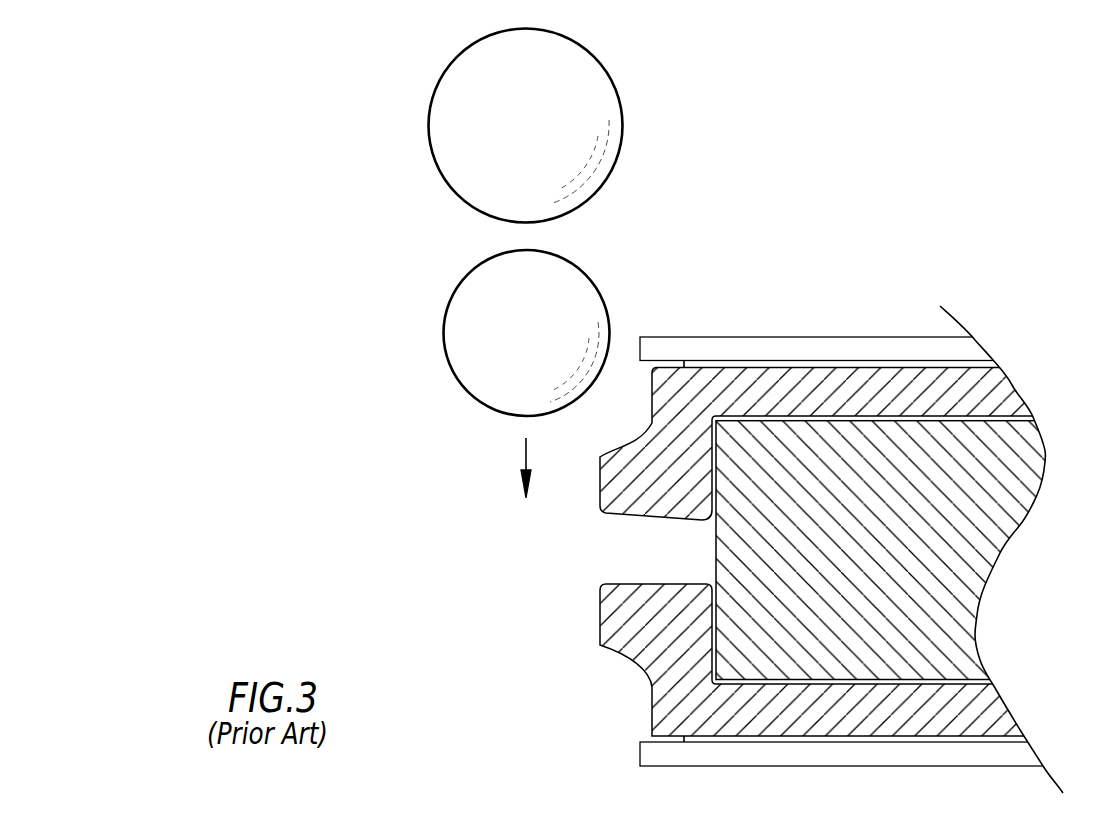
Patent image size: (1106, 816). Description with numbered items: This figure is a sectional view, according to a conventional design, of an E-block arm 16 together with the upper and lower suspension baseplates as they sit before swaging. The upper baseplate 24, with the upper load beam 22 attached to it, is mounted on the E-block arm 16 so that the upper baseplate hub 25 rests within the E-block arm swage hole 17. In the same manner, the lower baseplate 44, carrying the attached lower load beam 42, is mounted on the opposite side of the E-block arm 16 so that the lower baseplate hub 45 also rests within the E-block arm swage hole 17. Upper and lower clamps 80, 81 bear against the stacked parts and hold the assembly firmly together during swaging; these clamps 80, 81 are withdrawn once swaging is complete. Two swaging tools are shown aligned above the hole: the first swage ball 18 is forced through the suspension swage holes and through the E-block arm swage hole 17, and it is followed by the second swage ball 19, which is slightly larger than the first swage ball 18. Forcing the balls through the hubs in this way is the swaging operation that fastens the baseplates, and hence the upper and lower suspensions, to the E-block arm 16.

The E-block arm 16 is at (986, 553).
The E-block arm swage hole 17 is at (477, 552).
The first swage ball 18 is at (594, 282).
The second swage ball 19 is at (621, 103).
The upper load beam 22 is at (995, 363).
The upper baseplate 24 is at (1003, 391).
The upper baseplate hub 25 is at (600, 490).
The lower load beam 42 is at (1018, 740).
The lower baseplate 44 is at (1002, 698).
The lower baseplate hub 45 is at (600, 631).
The upper clamp 80 is at (848, 337).
The lower clamp 81 is at (890, 766).